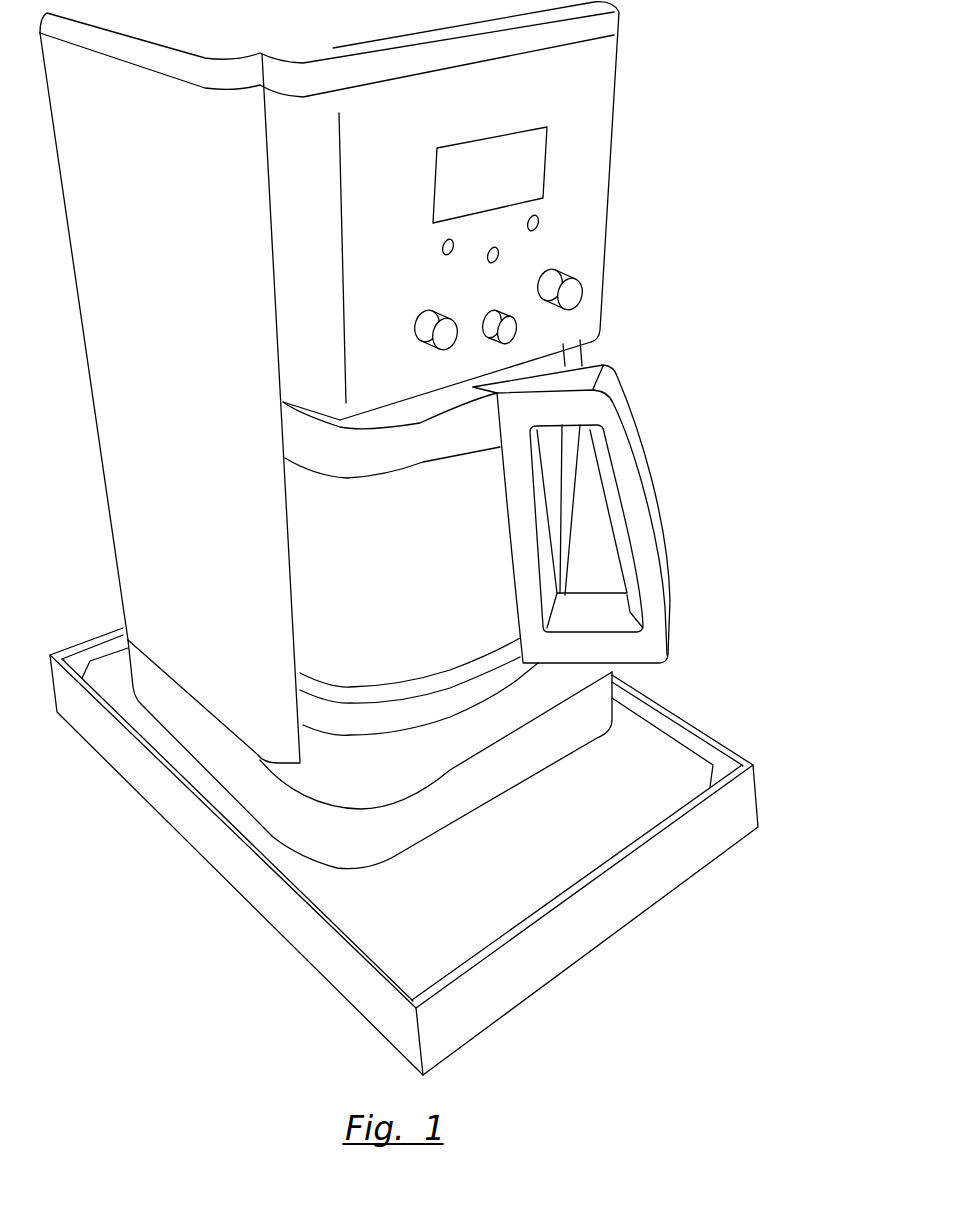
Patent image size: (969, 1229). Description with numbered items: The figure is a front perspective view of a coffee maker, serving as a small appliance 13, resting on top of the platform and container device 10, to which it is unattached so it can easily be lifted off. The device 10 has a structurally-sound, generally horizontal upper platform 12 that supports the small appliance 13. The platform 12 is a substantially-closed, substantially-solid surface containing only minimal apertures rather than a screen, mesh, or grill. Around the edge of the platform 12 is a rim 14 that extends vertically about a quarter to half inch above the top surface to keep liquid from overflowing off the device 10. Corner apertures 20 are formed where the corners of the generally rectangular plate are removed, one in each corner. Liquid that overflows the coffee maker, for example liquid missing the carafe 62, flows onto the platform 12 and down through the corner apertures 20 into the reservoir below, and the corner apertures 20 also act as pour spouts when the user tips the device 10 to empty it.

The platform and container device 10 is at (234, 906).
The upper platform 12 is at (572, 849).
The small appliance 13 is at (612, 194).
The rim 14 is at (670, 722).
The corner apertures 20 is at (79, 665).
The carafe 62 is at (442, 520).